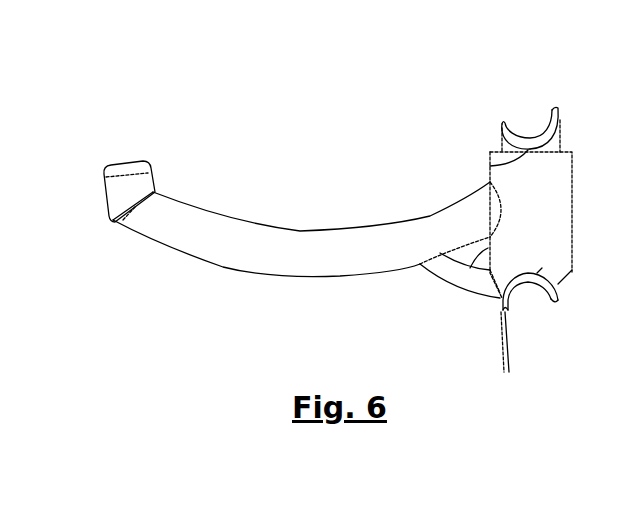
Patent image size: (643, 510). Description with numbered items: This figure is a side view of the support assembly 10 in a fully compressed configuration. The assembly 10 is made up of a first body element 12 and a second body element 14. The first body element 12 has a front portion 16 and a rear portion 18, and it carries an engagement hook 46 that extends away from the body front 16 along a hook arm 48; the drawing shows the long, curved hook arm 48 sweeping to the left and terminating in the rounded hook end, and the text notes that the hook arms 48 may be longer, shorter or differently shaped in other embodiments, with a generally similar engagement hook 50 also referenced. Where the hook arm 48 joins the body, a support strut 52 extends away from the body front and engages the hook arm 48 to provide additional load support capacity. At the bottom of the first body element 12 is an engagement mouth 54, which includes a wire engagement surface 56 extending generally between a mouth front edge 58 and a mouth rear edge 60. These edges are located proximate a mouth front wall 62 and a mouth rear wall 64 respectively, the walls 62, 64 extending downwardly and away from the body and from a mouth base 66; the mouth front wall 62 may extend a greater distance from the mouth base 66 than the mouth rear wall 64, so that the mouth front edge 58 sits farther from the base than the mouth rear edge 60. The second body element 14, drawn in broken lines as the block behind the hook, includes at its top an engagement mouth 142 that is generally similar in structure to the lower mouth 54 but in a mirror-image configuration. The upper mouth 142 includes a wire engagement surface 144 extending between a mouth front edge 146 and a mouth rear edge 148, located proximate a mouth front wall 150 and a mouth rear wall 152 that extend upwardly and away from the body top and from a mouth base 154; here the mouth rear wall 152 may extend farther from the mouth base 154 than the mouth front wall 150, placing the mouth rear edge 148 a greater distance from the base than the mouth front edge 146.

The support assembly 10 is at (371, 217).
The first body element 12 is at (300, 219).
The second body element 14 is at (516, 217).
The front portion 16 is at (470, 268).
The rear portion 18 is at (574, 184).
The engagement hook 46 is at (317, 198).
The hook arm 48 is at (300, 286).
The engagement hook 50 is at (126, 161).
The support strut 52 is at (457, 283).
The engagement mouth 54 is at (546, 325).
The wire engagement surface 56 is at (530, 285).
The mouth front edge 58 is at (508, 355).
The mouth rear edge 60 is at (587, 306).
The mouth front wall 62 is at (505, 303).
The mouth rear wall 64 is at (558, 293).
The mouth base 66 is at (537, 273).
The engagement mouth 142 is at (506, 99).
The wire engagement surface 144 is at (524, 138).
The mouth front edge 146 is at (505, 124).
The mouth rear edge 148 is at (555, 108).
The mouth front wall 150 is at (514, 107).
The mouth rear wall 152 is at (569, 105).
The mouth base 154 is at (490, 166).